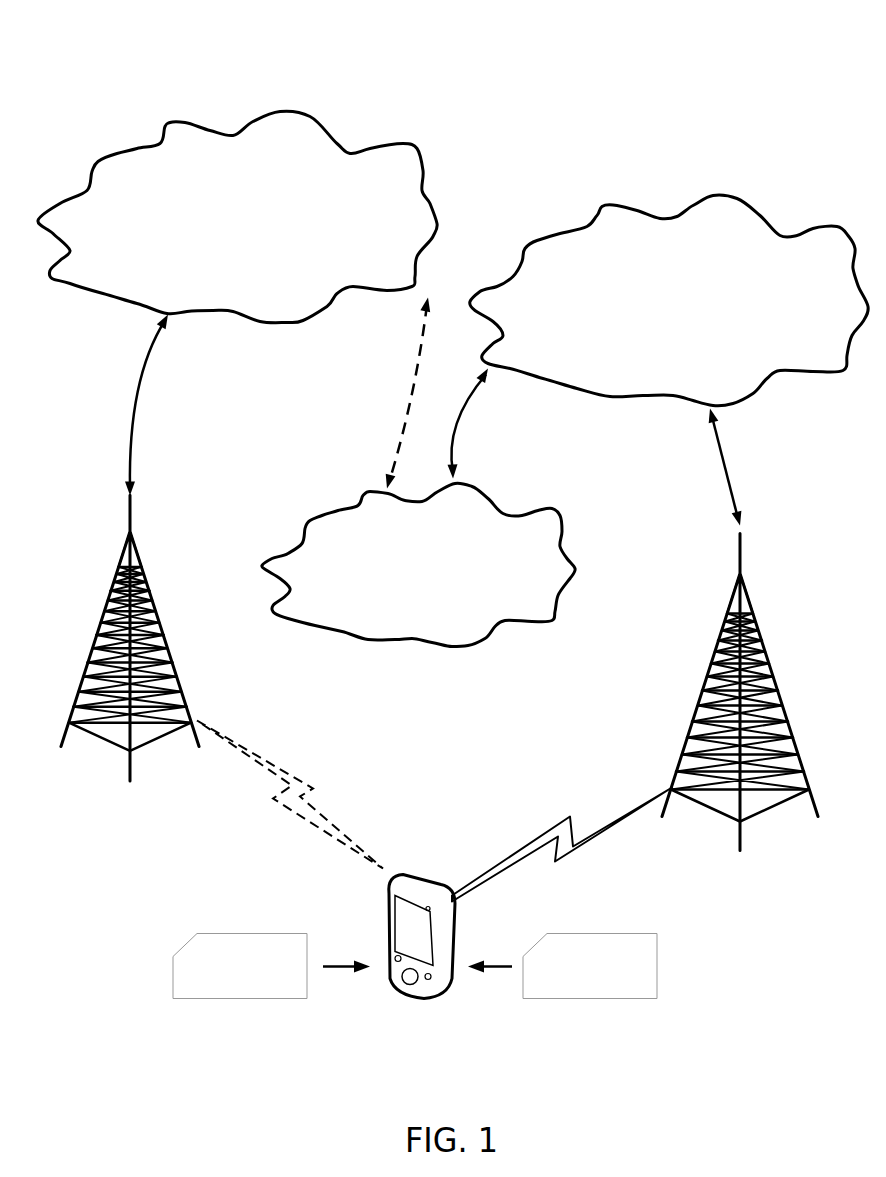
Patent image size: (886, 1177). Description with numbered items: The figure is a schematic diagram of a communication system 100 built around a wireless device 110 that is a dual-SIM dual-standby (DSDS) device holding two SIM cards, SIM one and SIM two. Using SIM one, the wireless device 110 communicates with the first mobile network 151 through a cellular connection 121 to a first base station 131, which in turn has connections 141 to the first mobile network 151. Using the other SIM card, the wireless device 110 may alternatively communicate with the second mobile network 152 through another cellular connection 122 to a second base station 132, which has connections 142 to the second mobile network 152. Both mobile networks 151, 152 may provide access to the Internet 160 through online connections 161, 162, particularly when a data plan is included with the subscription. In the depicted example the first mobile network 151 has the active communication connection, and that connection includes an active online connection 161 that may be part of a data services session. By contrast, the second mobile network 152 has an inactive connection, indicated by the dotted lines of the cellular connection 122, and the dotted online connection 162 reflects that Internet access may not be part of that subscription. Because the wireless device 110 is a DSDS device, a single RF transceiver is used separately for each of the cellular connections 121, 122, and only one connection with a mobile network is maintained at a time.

The communication system 100 is at (655, 93).
The wireless device 110 is at (430, 1000).
The cellular connection 121 is at (538, 840).
The cellular connection 122 is at (313, 790).
The first base station 131 is at (737, 581).
The second base station 132 is at (103, 628).
The connections 141 is at (718, 462).
The connections 142 is at (133, 388).
The first mobile network 151 is at (600, 207).
The second mobile network 152 is at (237, 323).
The Internet 160 is at (473, 647).
The online connection 161 is at (457, 437).
The online connection 162 is at (400, 445).